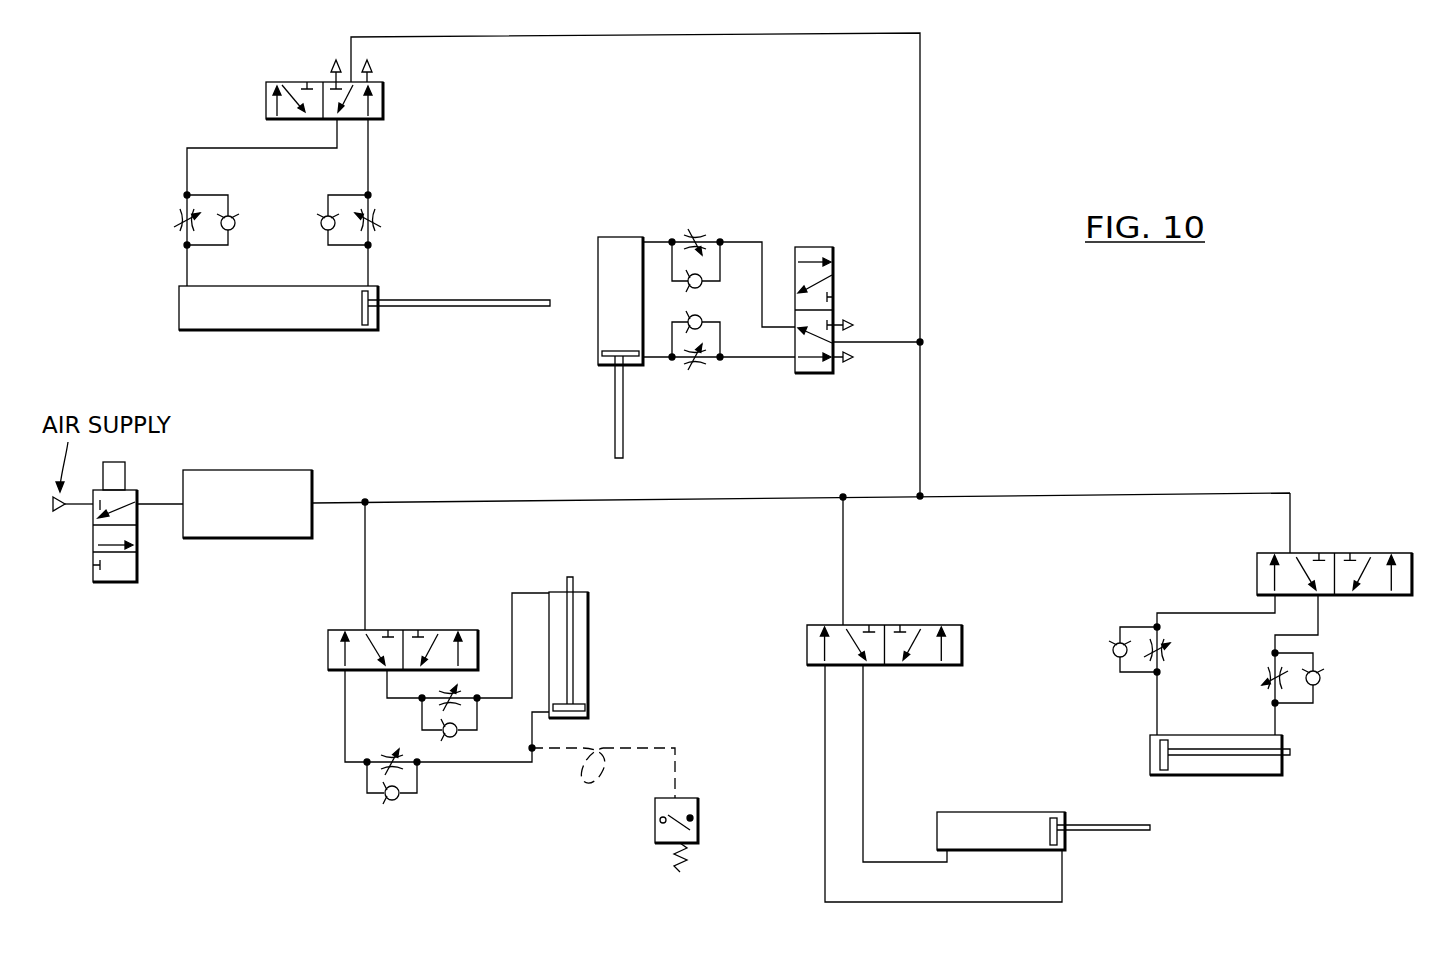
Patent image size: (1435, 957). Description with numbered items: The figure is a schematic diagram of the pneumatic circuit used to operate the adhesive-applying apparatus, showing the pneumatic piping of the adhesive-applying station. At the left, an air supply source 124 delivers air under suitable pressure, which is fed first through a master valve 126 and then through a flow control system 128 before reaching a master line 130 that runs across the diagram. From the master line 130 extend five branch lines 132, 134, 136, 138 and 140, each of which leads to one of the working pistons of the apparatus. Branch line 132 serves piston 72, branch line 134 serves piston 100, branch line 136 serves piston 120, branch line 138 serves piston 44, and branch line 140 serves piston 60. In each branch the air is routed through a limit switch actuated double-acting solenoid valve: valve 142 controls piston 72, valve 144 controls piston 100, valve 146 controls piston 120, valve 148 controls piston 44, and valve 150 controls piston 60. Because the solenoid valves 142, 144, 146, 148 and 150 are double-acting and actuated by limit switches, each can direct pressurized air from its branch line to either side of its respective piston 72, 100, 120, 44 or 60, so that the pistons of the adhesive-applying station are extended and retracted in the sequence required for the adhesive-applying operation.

The piston 44 is at (623, 242).
The piston 60 is at (308, 322).
The piston 72 is at (591, 610).
The piston 100 is at (993, 818).
The piston 120 is at (1263, 767).
The air supply source 124 is at (63, 513).
The master valve 126 is at (124, 477).
The flow control system 128 is at (247, 477).
The master line 130 is at (458, 501).
The branch line 132 is at (367, 541).
The branch line 134 is at (843, 559).
The branch line 136 is at (1290, 521).
The branch line 138 is at (887, 345).
The branch line 140 is at (920, 177).
The double-acting solenoid valve 142 is at (443, 630).
The double-acting solenoid valve 144 is at (912, 625).
The double-acting solenoid valve 146 is at (1372, 553).
The double-acting solenoid valve 148 is at (834, 287).
The double-acting solenoid valve 150 is at (305, 83).